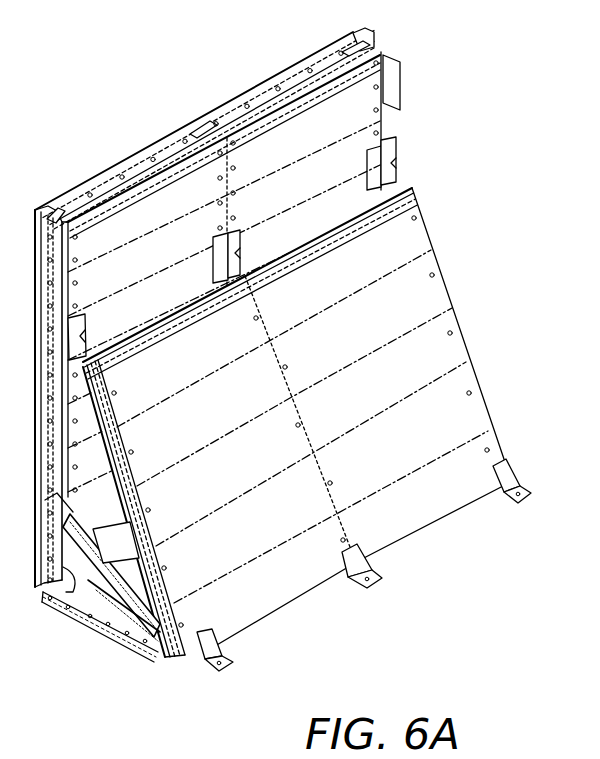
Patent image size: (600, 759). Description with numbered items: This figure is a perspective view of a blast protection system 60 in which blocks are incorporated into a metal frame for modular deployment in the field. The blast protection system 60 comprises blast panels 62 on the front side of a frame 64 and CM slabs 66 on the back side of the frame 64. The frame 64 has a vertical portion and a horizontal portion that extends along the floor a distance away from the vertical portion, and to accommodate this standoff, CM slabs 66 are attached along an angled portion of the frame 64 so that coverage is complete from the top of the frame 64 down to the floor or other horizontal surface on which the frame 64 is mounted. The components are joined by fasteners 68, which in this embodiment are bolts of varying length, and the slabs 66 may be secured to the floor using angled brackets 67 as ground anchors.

The blast protection system 60 is at (302, 373).
The blast panels 62 is at (274, 80).
The frame 64 is at (95, 600).
The CM slabs 66 is at (130, 217).
The angled brackets 67 is at (512, 498).
The fasteners 68 is at (163, 640).